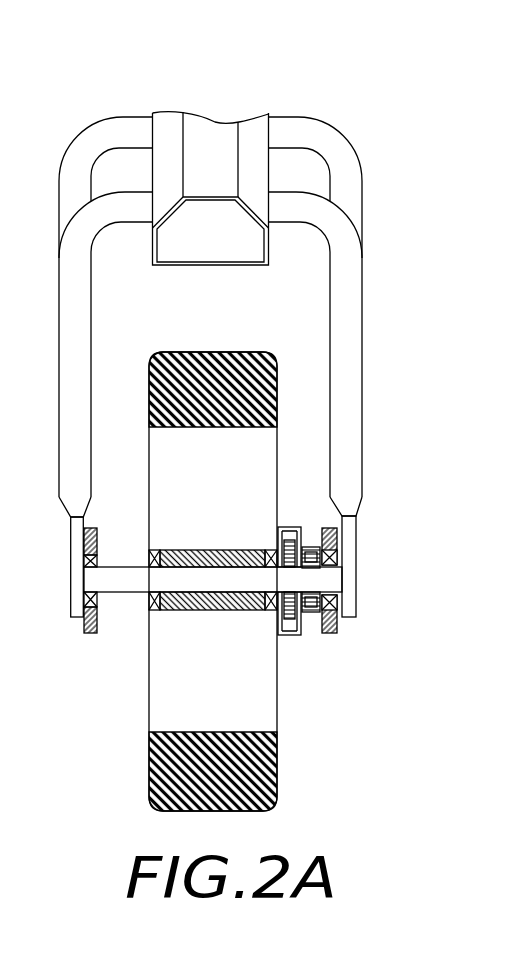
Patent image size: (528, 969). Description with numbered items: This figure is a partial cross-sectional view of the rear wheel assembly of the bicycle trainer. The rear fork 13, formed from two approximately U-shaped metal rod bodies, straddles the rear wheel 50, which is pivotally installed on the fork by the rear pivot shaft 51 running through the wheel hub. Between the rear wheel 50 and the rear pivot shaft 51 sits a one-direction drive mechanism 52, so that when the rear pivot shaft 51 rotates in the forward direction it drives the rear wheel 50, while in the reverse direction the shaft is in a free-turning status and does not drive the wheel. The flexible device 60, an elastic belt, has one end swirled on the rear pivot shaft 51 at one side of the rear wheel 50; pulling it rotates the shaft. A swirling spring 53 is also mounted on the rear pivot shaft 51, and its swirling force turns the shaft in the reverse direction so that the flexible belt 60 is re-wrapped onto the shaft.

The rear fork 13 is at (377, 256).
The rear wheel 50 is at (148, 698).
The rear pivot shaft 51 is at (310, 575).
The one-direction drive mechanism 52 is at (330, 629).
The swirling spring 53 is at (292, 632).
The flexible device 60 is at (321, 541).